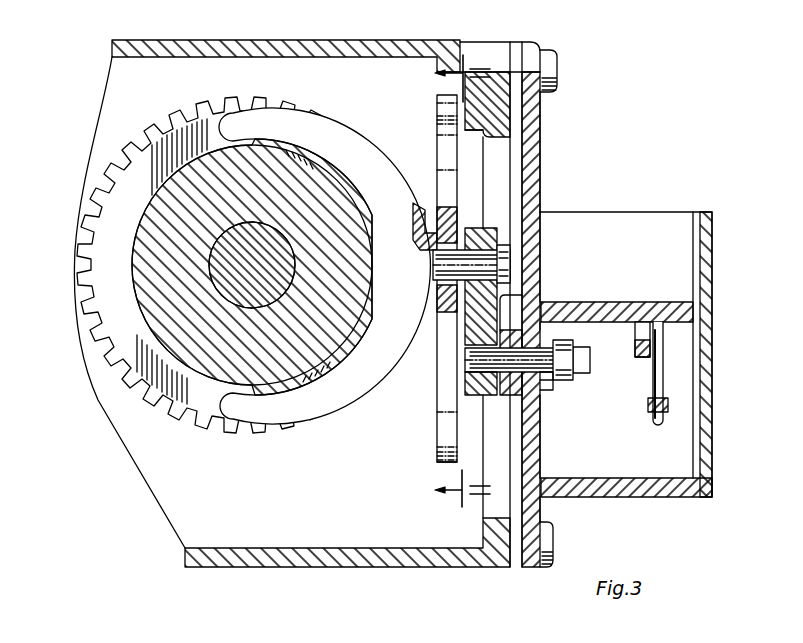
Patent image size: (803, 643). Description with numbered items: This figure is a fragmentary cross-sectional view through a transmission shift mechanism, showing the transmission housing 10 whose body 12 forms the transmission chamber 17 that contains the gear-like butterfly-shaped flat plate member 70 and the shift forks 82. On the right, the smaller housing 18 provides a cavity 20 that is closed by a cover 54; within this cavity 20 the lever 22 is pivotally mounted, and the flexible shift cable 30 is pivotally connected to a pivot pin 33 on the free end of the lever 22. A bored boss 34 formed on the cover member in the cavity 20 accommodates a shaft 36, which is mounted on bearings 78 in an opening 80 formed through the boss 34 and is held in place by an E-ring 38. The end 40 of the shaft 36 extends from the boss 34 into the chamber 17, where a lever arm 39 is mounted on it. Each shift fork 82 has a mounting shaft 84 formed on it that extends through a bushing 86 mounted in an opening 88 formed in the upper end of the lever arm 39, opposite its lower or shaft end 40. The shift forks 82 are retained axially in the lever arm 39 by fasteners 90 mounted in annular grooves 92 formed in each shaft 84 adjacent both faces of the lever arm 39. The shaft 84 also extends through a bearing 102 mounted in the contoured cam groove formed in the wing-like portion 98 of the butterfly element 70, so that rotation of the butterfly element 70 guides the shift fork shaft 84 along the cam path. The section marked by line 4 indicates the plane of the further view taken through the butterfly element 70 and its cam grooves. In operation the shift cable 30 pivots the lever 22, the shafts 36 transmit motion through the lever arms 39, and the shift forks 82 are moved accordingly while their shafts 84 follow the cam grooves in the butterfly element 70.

The transmission housing 10 is at (556, 150).
The body 12 is at (374, 54).
The transmission chamber 17 is at (304, 76).
The shift fork 82 is at (347, 143).
The section line 4- 4 is at (449, 291).
The bearing 102 is at (435, 207).
The mounting shaft 84 is at (456, 248).
The bushing 86 is at (486, 246).
The annular groove 92 is at (434, 263).
The fastener 90 is at (437, 288).
The opening 88 is at (465, 290).
The wing-like portion 98 is at (448, 358).
The shaft end 40 is at (445, 388).
The butterfly-shaped flat plate member 70 is at (433, 423).
The lever arm 39 is at (470, 400).
The opening 80 is at (540, 342).
The lever 22 is at (636, 335).
The shaft 36 is at (581, 363).
The E-ring 38 is at (580, 383).
The pivot pin 33 is at (660, 343).
The bored boss 34 is at (553, 390).
The flexible shift cable 30 is at (648, 402).
The bearing 78 is at (541, 390).
The cover 54 is at (706, 364).
The smaller housing 18 is at (585, 486).
The cavity 20 is at (656, 478).